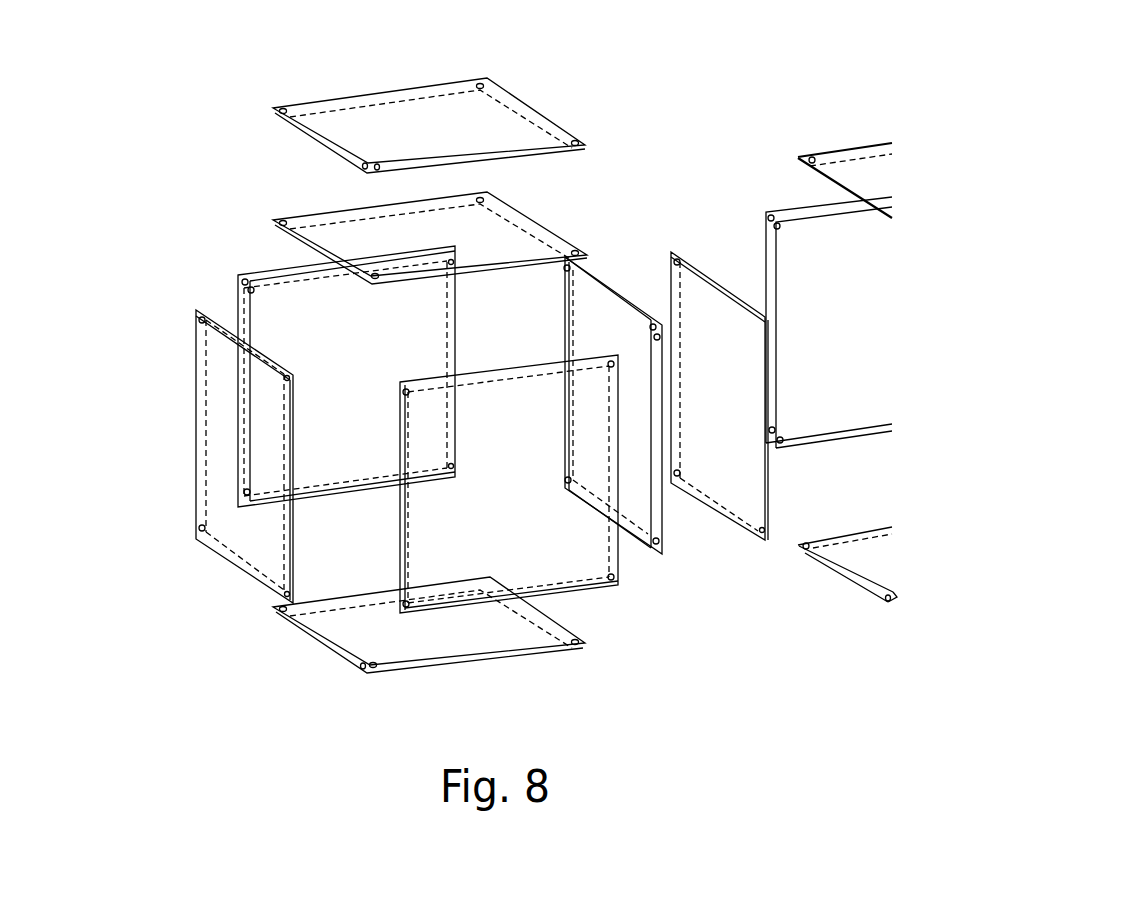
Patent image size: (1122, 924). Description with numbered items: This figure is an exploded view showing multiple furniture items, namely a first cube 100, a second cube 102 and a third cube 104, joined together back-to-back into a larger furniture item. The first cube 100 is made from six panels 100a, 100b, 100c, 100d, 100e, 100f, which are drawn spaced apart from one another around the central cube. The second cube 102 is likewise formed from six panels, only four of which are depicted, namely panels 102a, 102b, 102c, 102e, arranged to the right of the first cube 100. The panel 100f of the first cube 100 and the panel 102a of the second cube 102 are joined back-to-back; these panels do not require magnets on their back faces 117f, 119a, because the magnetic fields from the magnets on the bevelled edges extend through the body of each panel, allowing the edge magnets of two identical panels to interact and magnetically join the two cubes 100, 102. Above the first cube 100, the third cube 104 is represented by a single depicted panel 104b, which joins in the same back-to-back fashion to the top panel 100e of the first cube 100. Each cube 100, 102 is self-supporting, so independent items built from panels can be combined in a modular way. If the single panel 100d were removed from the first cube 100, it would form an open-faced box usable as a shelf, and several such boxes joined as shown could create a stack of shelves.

The first cube 100 is at (124, 357).
The panel 100a is at (227, 523).
The panel 100b is at (345, 650).
The panel 100c is at (243, 310).
The panel 100d is at (585, 590).
The top panel 100e is at (296, 236).
The panel 100f is at (598, 285).
The back face 117f is at (670, 538).
The back face 119a is at (745, 505).
The second cube 102 is at (806, 638).
The panel 102a is at (762, 540).
The panel 102b is at (873, 587).
The panel 102c is at (767, 243).
The panel 102e is at (845, 153).
The third cube 104 is at (672, 84).
The panel 104b is at (537, 112).